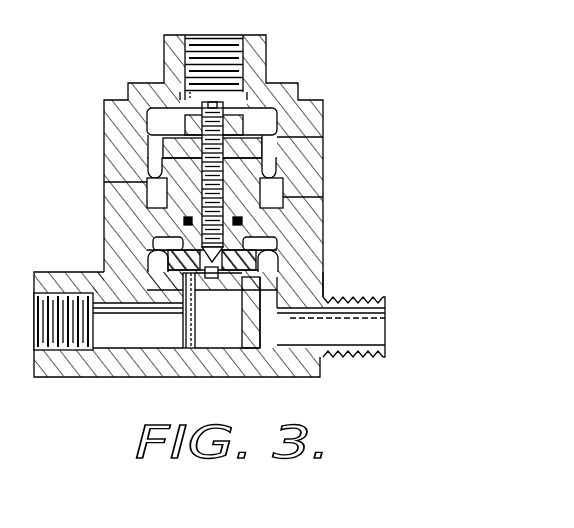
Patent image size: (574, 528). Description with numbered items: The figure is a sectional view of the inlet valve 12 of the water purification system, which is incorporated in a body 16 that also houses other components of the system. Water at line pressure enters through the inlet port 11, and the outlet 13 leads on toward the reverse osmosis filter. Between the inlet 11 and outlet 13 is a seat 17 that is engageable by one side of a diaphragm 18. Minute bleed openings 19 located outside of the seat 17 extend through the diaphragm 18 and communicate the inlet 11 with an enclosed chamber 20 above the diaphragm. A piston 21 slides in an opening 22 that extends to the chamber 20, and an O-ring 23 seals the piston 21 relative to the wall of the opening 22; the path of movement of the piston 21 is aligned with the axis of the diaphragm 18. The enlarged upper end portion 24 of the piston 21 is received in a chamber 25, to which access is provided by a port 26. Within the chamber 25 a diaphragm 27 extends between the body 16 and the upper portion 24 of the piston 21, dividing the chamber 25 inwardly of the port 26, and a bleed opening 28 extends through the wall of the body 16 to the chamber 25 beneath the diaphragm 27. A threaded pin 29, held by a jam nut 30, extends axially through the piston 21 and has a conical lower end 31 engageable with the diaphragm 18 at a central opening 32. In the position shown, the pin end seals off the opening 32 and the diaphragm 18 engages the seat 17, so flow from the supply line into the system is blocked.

The inlet port 11 is at (372, 292).
The valve 12 is at (98, 80).
The outlet 13 is at (113, 340).
The body 16 is at (280, 370).
The seat 17 is at (242, 278).
The diaphragm 18 is at (280, 242).
The bleed openings 19 is at (280, 254).
The enclosed chamber 20 is at (122, 247).
The piston 21 is at (283, 187).
The opening 22 is at (188, 197).
The O-ring 23 is at (184, 221).
The upper end portion 24 is at (258, 147).
The chamber 25 is at (277, 124).
The port 26 is at (226, 42).
The diaphragm 27 is at (156, 179).
The bleed opening 28 is at (305, 208).
The threaded pin 29 is at (226, 110).
The jam nut 30 is at (185, 122).
The conical lower end 31 is at (240, 194).
The central opening 32 is at (210, 279).